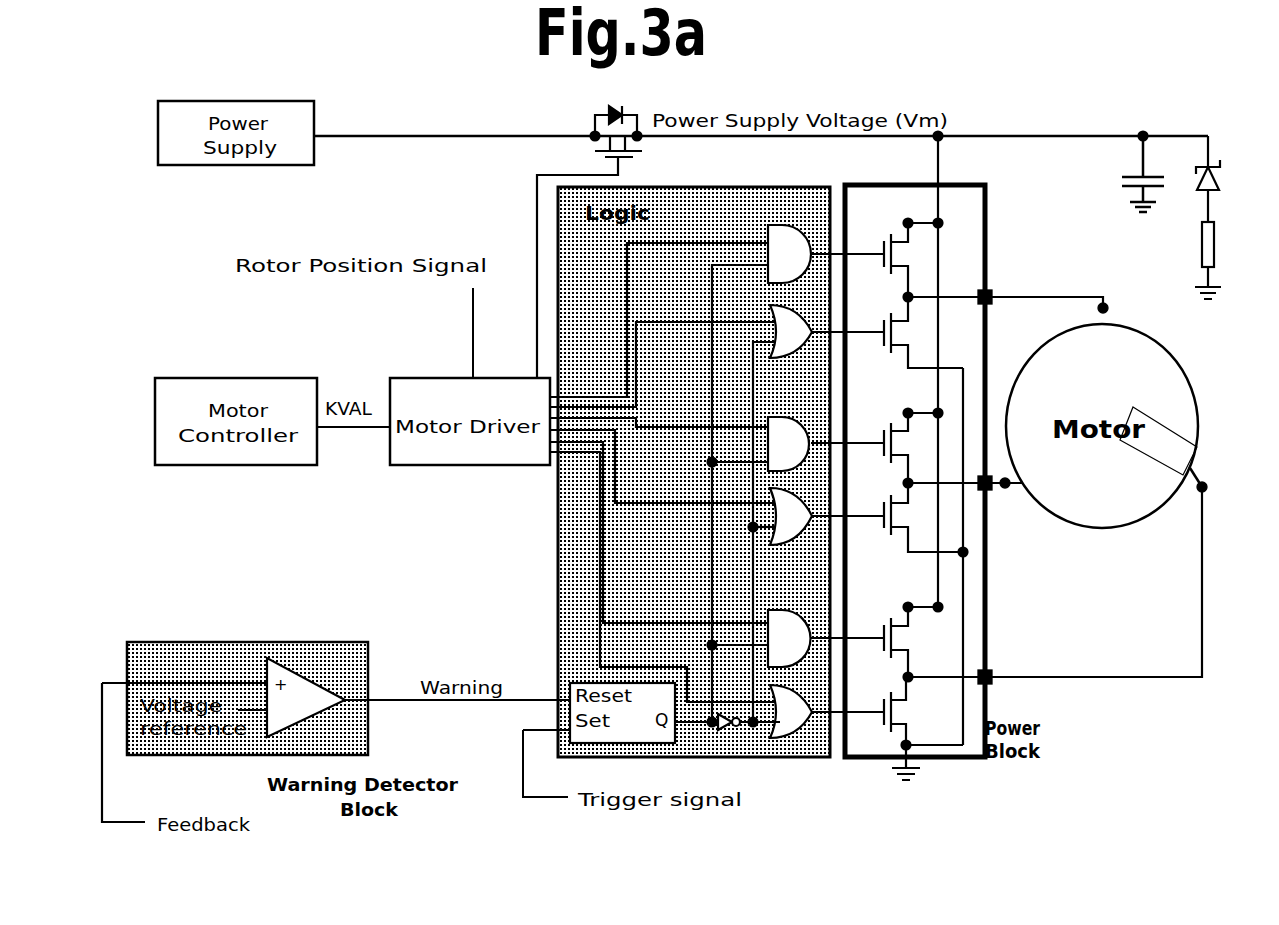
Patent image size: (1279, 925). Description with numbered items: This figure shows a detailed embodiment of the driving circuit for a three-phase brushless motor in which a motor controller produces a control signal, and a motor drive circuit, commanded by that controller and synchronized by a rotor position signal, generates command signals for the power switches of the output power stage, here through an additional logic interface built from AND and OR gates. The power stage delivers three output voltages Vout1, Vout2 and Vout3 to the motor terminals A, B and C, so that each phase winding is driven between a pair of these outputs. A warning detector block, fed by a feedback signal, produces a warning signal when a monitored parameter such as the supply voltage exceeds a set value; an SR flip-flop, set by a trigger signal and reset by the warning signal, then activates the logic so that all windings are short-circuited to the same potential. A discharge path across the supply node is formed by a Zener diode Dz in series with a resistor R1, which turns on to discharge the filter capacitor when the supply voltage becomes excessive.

The first output voltage node Vout1 is at (1040, 289).
The second output voltage node Vout2 is at (1010, 501).
The third output voltage node Vout3 is at (1090, 585).
The motor terminal A is at (1112, 311).
The motor terminal B is at (1011, 492).
The motor terminal C is at (1192, 495).
The Zener diode Dz is at (1220, 179).
The series resistor R1 is at (1220, 260).